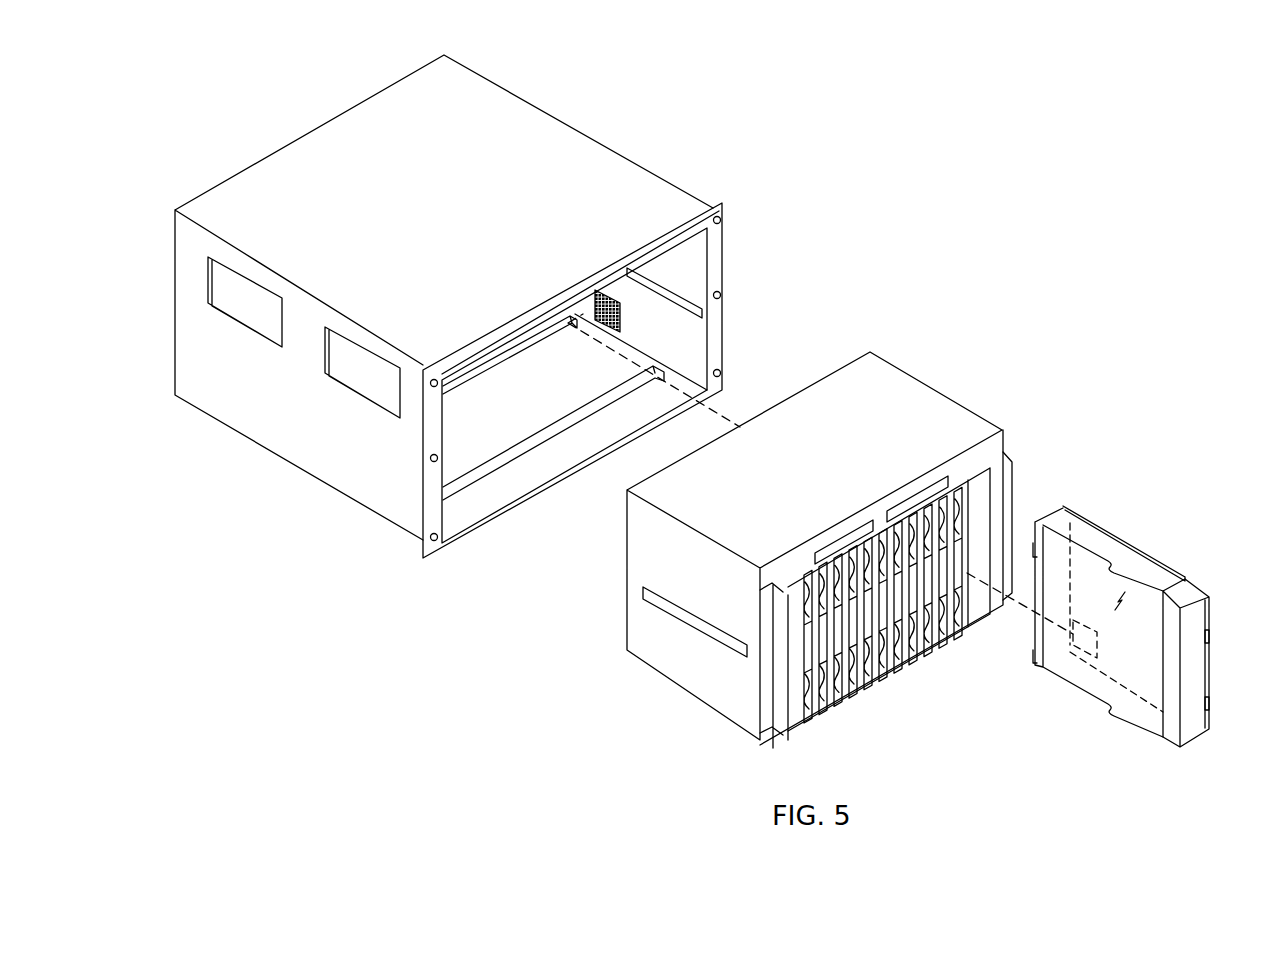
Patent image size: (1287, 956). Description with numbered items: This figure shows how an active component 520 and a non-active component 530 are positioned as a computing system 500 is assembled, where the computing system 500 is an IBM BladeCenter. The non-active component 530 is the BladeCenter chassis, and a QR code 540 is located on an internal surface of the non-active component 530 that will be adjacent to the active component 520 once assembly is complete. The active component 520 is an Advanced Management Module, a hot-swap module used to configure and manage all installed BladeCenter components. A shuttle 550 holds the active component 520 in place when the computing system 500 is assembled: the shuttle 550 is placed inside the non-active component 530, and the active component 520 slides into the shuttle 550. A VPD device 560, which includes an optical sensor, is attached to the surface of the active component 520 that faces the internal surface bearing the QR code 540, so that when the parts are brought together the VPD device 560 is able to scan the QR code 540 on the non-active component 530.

The computing system 500 is at (972, 244).
The non-active component 530 is at (642, 172).
The QR code 540 is at (620, 318).
The shuttle 550 is at (890, 362).
The active component 520 is at (1123, 553).
The VPD device 560 is at (1182, 578).